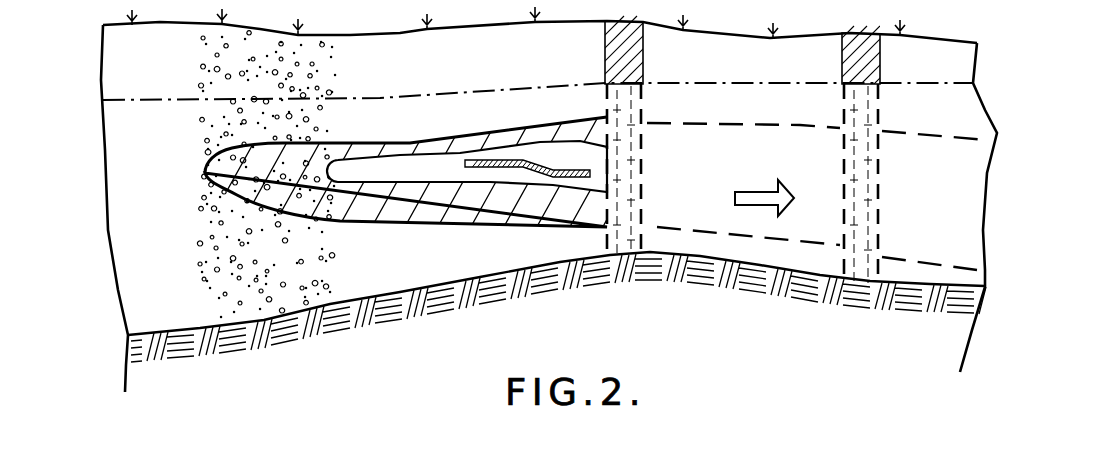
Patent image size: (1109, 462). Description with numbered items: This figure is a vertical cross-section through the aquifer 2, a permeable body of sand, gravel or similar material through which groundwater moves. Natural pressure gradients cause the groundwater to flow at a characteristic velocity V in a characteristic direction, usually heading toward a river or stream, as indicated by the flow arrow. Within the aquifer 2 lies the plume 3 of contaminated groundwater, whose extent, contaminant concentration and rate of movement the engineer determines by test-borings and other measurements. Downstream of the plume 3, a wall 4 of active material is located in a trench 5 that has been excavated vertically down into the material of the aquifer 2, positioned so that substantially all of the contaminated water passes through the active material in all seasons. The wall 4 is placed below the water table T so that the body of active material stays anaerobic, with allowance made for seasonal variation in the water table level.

The aquifer 2 is at (264, 297).
The plume 3 is at (352, 172).
The wall of active material 4 is at (643, 140).
The trench 5 is at (643, 172).
The water table T is at (163, 100).
The velocity of groundwater V is at (752, 192).